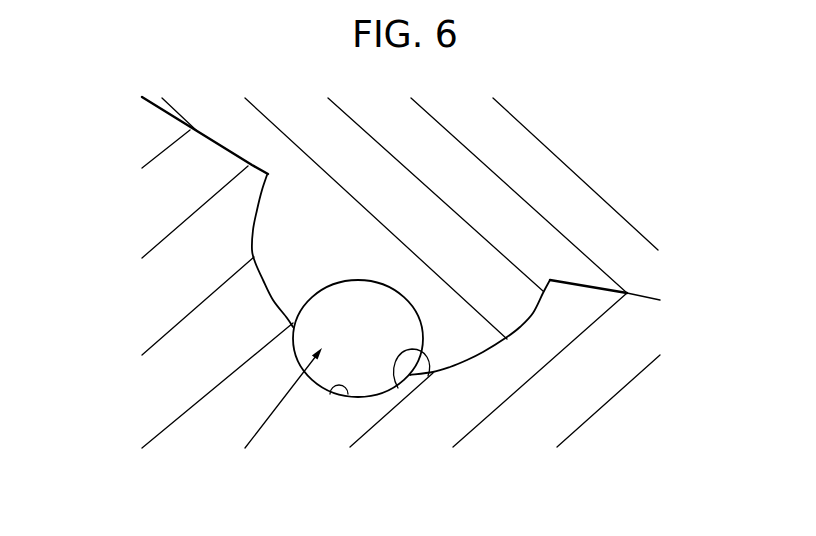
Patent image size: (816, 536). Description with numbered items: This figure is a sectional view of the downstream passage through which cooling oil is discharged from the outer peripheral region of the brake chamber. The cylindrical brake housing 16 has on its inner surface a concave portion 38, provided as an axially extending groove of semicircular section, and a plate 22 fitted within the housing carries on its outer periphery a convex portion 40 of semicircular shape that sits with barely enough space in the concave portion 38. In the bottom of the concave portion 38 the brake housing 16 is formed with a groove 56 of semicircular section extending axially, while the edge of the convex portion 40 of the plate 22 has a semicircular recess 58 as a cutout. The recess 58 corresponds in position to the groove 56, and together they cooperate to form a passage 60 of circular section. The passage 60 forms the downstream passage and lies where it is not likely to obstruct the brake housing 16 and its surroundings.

The brake housing 16 is at (594, 388).
The plate 22 is at (594, 227).
The concave portion 38 is at (252, 235).
The convex portion 40 is at (470, 338).
The groove 56 is at (348, 394).
The recess 58 is at (398, 388).
The passage 60 is at (302, 372).